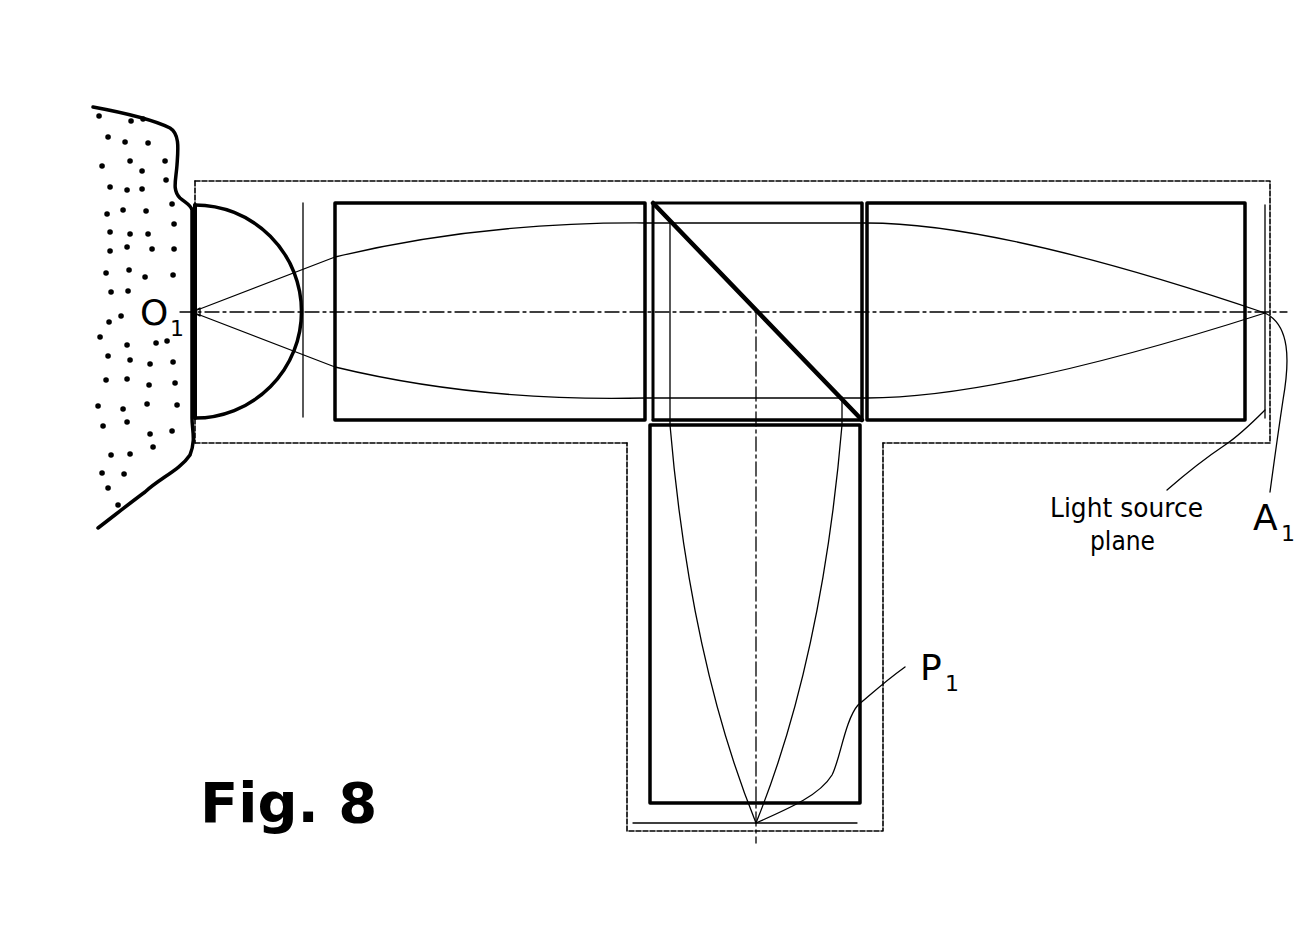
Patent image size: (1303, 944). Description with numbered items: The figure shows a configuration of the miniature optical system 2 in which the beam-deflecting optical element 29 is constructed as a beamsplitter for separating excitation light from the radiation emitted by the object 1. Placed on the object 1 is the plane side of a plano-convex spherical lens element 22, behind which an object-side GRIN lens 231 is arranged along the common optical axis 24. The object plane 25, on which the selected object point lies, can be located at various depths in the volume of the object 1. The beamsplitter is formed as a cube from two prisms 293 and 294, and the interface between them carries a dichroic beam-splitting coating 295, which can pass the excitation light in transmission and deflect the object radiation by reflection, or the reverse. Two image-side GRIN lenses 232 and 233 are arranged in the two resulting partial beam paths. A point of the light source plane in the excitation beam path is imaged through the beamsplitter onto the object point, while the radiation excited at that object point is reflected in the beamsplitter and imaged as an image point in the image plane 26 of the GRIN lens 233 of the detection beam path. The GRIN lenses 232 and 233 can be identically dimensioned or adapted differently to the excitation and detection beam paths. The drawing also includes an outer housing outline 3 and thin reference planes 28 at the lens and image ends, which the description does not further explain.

The object 1 is at (152, 133).
The miniature optical system 2 is at (203, 112).
The housing 3 is at (400, 445).
The plano-convex spherical lens element 22 is at (231, 227).
The optical axis 24 is at (975, 315).
The object plane 25 is at (196, 428).
The image plane 26 is at (627, 824).
The reference plane 28 is at (319, 212).
The beam-deflecting optical element 29 is at (700, 195).
The object-side GRIN lens 231 is at (497, 208).
The image-side GRIN lens 232 is at (1065, 208).
The image-side GRIN lens 233 is at (660, 668).
The prism 293 is at (660, 405).
The prism 294 is at (848, 222).
The dichroic beam-splitting coating 295 is at (725, 276).